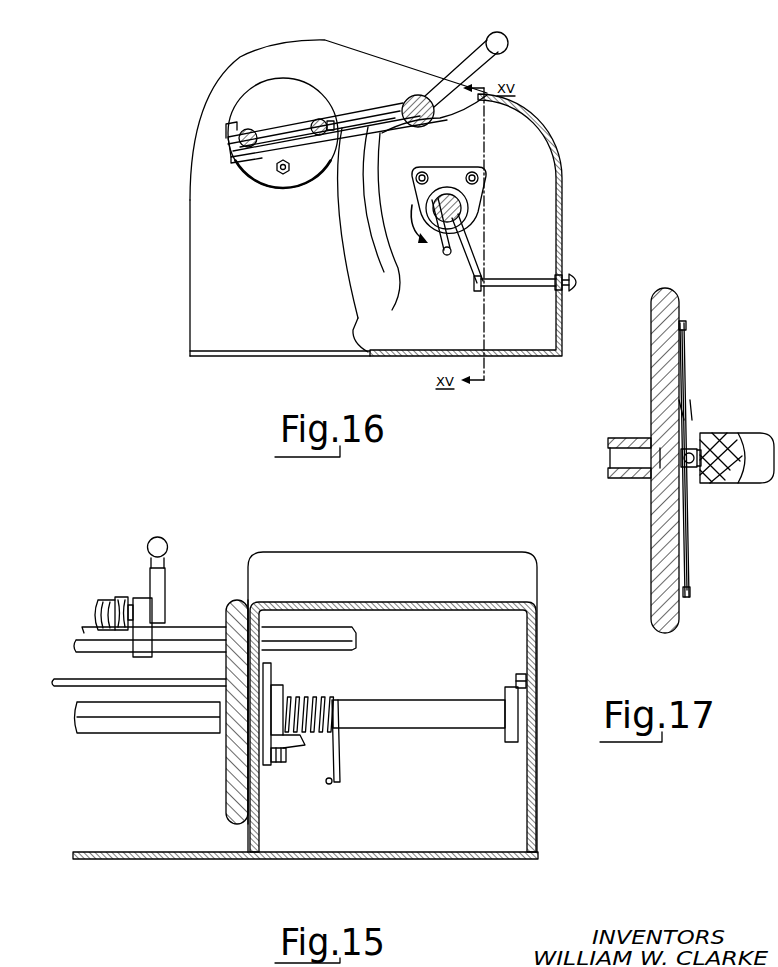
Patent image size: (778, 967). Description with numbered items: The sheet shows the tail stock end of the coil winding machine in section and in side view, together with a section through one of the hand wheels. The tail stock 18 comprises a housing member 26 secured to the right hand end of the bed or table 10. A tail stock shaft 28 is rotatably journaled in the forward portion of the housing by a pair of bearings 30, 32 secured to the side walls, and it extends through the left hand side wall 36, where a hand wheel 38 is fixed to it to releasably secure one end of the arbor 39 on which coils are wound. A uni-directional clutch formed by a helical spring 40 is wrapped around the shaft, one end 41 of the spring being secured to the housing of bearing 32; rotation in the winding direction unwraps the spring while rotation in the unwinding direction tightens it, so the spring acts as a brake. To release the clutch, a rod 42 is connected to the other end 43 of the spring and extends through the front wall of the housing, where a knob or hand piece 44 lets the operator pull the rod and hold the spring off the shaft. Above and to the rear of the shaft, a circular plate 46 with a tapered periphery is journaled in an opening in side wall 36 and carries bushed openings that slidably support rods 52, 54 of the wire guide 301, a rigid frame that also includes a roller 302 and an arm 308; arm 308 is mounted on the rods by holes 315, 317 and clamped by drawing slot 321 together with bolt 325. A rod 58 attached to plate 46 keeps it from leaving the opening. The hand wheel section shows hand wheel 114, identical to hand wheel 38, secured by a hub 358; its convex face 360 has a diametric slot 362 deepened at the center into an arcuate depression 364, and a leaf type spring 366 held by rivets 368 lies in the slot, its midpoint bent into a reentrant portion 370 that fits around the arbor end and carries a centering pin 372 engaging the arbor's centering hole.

In FIG. 16, the bed or table 10 is at (547, 354).
In FIG. 15, the bed or table 10 is at (140, 862).
In FIG. 16, the tail stock 18 is at (186, 220).
In FIG. 15, the tail stock 18 is at (278, 546).
In FIG. 16, the housing member 26 is at (257, 52).
In FIG. 15, the housing member 26 is at (343, 558).
In FIG. 16, the tail stock shaft 28 is at (461, 205).
In FIG. 15, the tail stock shaft 28 is at (361, 730).
In FIG. 16, the bearing 30 is at (437, 183).
In FIG. 15, the bearing 30 is at (507, 741).
In FIG. 15, the bearing 32 is at (282, 694).
In FIG. 16, the left hand side wall 36 is at (357, 320).
In FIG. 15, the left hand side wall 36 is at (250, 830).
In FIG. 16, the hand wheel 38 is at (338, 235).
In FIG. 15, the hand wheel 38 is at (227, 772).
In FIG. 15, the arbor 39 is at (136, 735).
In FIG. 17, the arbor 39 is at (742, 480).
In FIG. 16, the helical spring 40 is at (474, 243).
In FIG. 15, the helical spring 40 is at (335, 699).
In FIG. 16, the end of spring 41 is at (446, 257).
In FIG. 15, the end of spring 41 is at (274, 764).
In FIG. 16, the rod 42 is at (511, 279).
In FIG. 15, the rod 42 is at (328, 784).
In FIG. 16, the end of clutch spring 43 is at (479, 291).
In FIG. 15, the end of clutch spring 43 is at (320, 783).
In FIG. 16, the knob or hand piece 44 is at (577, 278).
In FIG. 16, the circular plate 46 is at (286, 85).
In FIG. 16, the rod 52 is at (239, 137).
In FIG. 15, the rod 52 is at (75, 642).
In FIG. 16, the rod 54 is at (320, 120).
In FIG. 15, the rod 54 is at (96, 633).
In FIG. 16, the rod 58 is at (281, 175).
In FIG. 15, the rod 58 is at (63, 682).
In FIG. 17, the hand wheel 114 is at (651, 556).
In FIG. 16, the wire guide 301 is at (384, 92).
In FIG. 15, the wire guide 301 is at (103, 590).
In FIG. 16, the roller 302 is at (420, 95).
In FIG. 15, the roller 302 is at (122, 597).
In FIG. 16, the arm 308 is at (410, 121).
In FIG. 15, the arm 308 is at (142, 652).
In FIG. 16, the hole 315 is at (246, 152).
In FIG. 16, the hole 317 is at (330, 118).
In FIG. 16, the slot 321 is at (286, 108).
In FIG. 16, the bolt 325 is at (229, 126).
In FIG. 17, the hub 358 is at (620, 438).
In FIG. 17, the convex face 360 is at (688, 558).
In FIG. 17, the diametric slot 362 is at (686, 411).
In FIG. 17, the arcuate depression 364 is at (674, 484).
In FIG. 17, the leaf type spring 366 is at (688, 378).
In FIG. 17, the rivets 368 is at (688, 333).
In FIG. 17, the reentrant portion 370 is at (678, 470).
In FIG. 17, the centering pin 372 is at (687, 452).